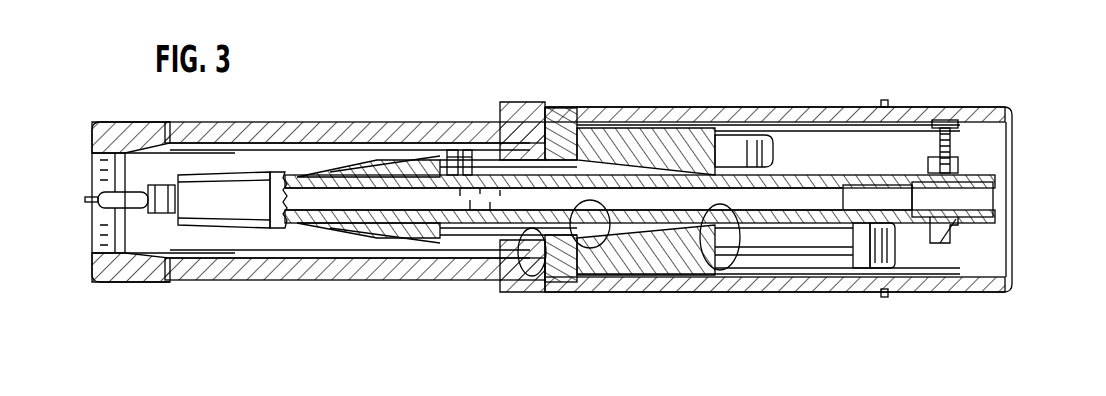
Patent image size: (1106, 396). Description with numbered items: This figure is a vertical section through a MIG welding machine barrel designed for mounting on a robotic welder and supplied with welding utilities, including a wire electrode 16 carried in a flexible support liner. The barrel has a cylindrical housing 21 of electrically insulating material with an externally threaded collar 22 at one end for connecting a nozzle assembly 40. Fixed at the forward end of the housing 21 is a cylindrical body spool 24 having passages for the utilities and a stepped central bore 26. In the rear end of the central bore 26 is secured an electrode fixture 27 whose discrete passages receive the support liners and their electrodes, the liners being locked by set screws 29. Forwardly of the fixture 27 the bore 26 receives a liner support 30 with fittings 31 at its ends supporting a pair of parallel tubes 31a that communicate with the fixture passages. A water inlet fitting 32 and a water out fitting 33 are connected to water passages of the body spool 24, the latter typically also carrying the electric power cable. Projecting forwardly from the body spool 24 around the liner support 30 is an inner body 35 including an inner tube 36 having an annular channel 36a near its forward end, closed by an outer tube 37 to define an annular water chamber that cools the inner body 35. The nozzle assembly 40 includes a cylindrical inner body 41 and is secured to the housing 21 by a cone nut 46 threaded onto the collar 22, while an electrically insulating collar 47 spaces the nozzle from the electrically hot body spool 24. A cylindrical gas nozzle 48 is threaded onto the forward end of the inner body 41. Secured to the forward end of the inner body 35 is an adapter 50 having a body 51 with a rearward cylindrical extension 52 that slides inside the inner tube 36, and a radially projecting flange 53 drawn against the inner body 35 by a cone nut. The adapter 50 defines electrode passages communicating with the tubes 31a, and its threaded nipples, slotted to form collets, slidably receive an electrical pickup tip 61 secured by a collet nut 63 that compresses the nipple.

The wire electrode 16 is at (86, 199).
The cylindrical housing 21 is at (973, 107).
The externally threaded collar 22 is at (650, 125).
The cylindrical body spool 24 is at (622, 260).
The stepped central bore 26 is at (717, 272).
The electrode fixture 27 is at (990, 175).
The set screw 29 is at (923, 123).
The liner support 30 is at (523, 273).
The fitting 31 is at (420, 240).
The parallel tube 31a is at (550, 267).
The water inlet fitting 32 is at (733, 140).
The water out fitting 33 is at (838, 248).
The inner body 35 is at (600, 245).
The inner tube 36 is at (647, 125).
The annular channel 36a is at (468, 172).
The outer tube 37 is at (472, 228).
The nozzle assembly 40 is at (363, 122).
The cylindrical inner body 41 is at (270, 268).
The cone nut 46 is at (523, 120).
The electrically insulating collar 47 is at (563, 117).
The cylindrical gas nozzle 48 is at (125, 130).
The adapter 50 is at (220, 182).
The body 51 is at (233, 220).
The cylindrical extension 52 is at (290, 232).
The flange 53 is at (367, 167).
The electrical pickup tip 61 is at (96, 236).
The collet nut 63 is at (162, 185).